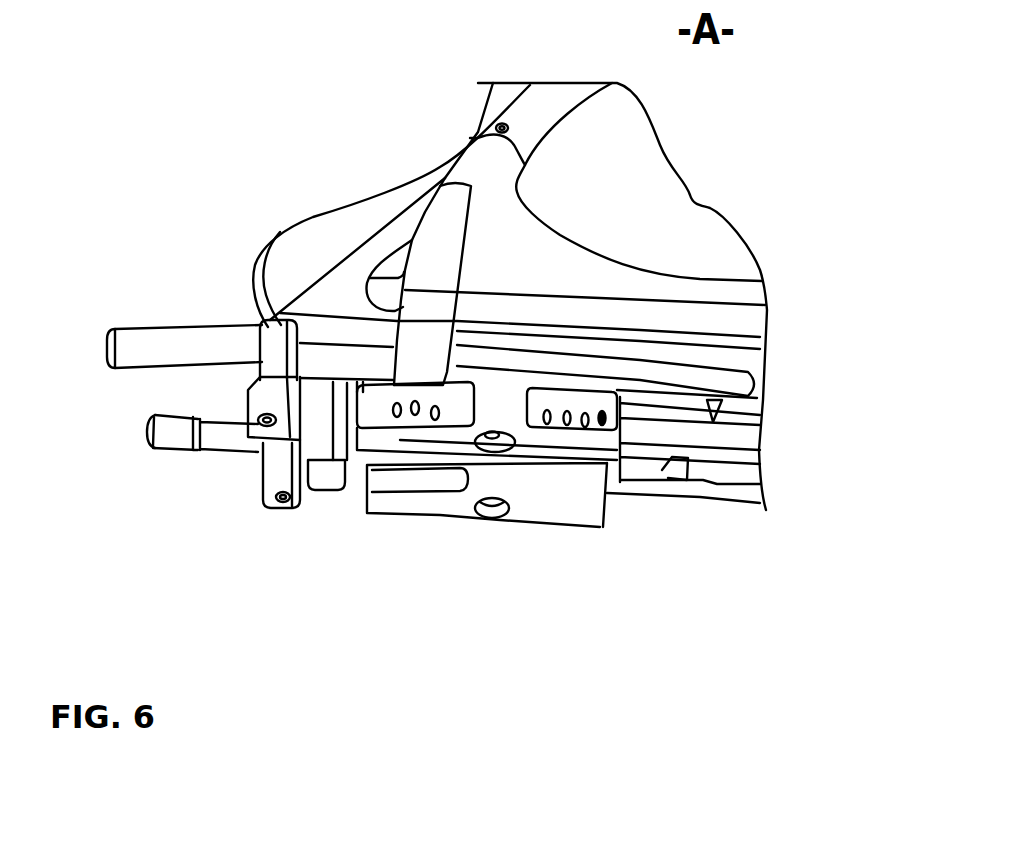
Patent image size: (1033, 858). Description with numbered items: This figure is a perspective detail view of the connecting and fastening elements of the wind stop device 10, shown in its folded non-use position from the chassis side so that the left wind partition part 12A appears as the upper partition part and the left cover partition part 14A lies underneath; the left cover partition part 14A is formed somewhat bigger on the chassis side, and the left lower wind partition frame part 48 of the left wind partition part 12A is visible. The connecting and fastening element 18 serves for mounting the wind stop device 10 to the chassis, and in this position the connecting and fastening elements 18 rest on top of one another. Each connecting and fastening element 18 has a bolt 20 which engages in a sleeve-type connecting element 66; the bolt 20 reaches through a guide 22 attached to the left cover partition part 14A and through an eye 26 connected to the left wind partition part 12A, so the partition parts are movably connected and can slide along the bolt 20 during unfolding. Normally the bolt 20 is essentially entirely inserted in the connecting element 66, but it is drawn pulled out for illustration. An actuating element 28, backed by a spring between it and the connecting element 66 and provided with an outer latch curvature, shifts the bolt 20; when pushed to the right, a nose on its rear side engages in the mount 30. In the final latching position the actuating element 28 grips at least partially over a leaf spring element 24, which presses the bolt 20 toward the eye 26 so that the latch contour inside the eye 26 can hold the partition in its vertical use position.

The wind stop device 10 is at (165, 120).
The left wind partition part 12A is at (670, 205).
The left cover partition part 14A is at (315, 215).
The connecting and fastening element 18 is at (180, 396).
The bolt 20 is at (180, 349).
The guide 22 is at (275, 347).
The spring element 24 is at (315, 415).
The eye 26 is at (417, 352).
The actuating element 28 is at (507, 407).
The mount 30 is at (657, 468).
The left lower wind partition frame part 48 is at (745, 300).
The connecting element 66 is at (747, 360).